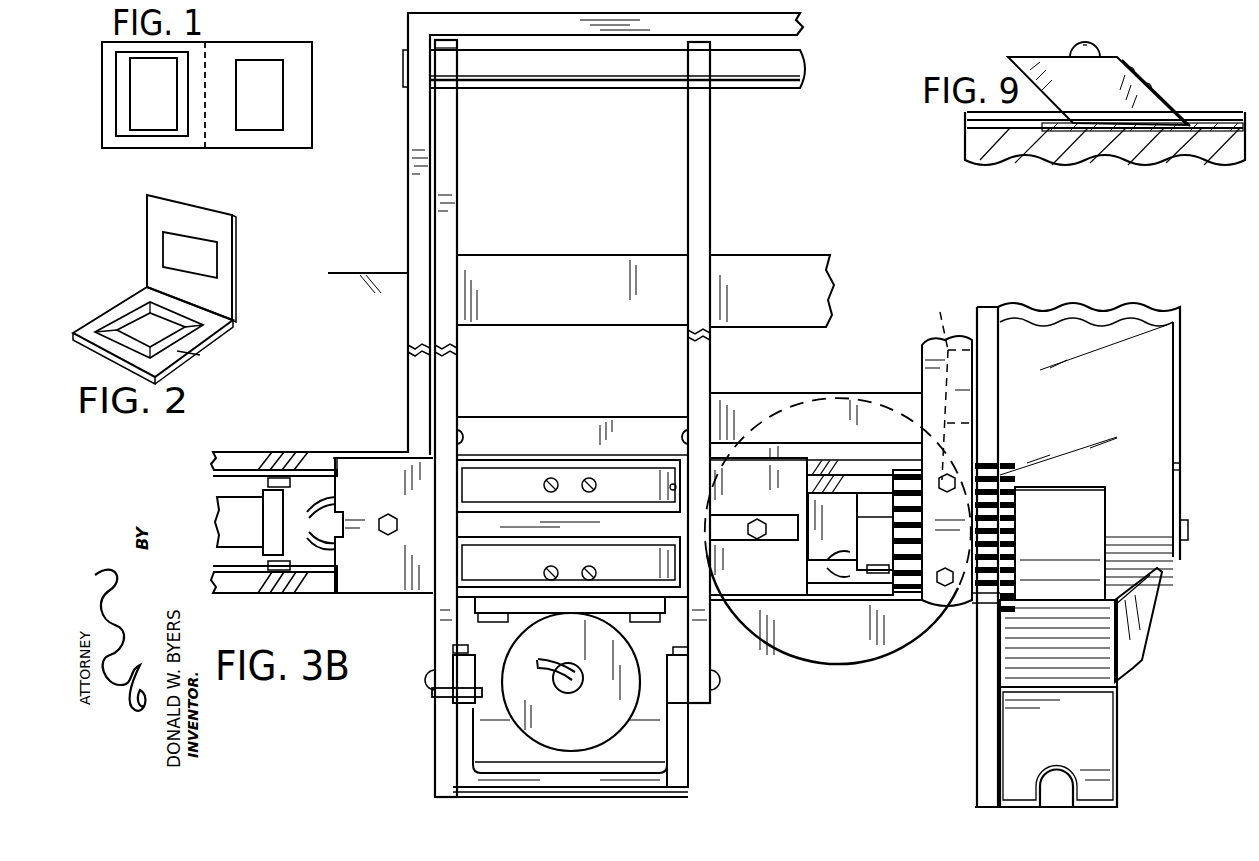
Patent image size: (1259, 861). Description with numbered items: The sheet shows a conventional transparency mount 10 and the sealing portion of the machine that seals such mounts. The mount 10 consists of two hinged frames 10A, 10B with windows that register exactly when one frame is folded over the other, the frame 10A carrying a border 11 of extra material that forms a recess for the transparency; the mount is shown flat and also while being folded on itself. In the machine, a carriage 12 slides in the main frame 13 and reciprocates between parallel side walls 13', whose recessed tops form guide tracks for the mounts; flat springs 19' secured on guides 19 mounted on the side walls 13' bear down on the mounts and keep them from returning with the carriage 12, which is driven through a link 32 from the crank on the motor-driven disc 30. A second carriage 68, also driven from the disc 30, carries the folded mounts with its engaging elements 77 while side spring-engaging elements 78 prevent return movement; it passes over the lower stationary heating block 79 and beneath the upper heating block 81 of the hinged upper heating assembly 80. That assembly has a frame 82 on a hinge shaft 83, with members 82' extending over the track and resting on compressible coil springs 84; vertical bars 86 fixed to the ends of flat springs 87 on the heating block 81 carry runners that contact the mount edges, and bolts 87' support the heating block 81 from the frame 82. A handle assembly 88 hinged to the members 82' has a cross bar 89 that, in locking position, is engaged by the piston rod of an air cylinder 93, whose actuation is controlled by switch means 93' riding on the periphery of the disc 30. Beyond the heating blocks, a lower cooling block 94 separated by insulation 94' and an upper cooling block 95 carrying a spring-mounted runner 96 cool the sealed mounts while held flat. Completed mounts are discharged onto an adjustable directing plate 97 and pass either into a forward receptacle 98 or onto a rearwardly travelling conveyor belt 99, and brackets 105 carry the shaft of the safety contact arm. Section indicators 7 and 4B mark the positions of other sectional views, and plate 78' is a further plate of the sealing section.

In FIG. 1, the mount 10 is at (230, 80).
In FIG. 2, the mount 10 is at (194, 295).
In FIG. 1, the frame 10A is at (111, 95).
In FIG. 2, the frame 10A is at (118, 313).
In FIG. 9, the frame 10A is at (1082, 130).
In FIG. 1, the frame 10B is at (278, 95).
In FIG. 2, the frame 10B is at (193, 246).
In FIG. 1, the border 11 is at (146, 94).
In FIG. 2, the border 11 is at (201, 358).
In FIG. 9, the carriage 12 is at (1138, 147).
In FIG. 9, the guides 19 is at (1097, 83).
In FIG. 9, the flat springs 19' is at (1165, 93).
In FIG. 3B, the main frame 13 is at (760, 410).
In FIG. 3B, the side walls 13' is at (568, 526).
In FIG. 3B, the disc 30 is at (858, 642).
In FIG. 3B, the link 32 is at (249, 522).
In FIG. 3B, the second carriage 68 is at (827, 562).
In FIG. 3B, the engaging elements 77 is at (268, 482).
In FIG. 3B, the side spring-engaging elements 78 is at (572, 436).
In FIG. 3B, the plate 78' is at (816, 434).
In FIG. 3B, the lower stationary heating block 79 is at (828, 548).
In FIG. 3B, the upper heating assembly 80 is at (458, 210).
In FIG. 3B, the upper heating block 81 is at (621, 372).
In FIG. 3B, the frame 82 is at (640, 420).
In FIG. 3B, the frame members 82' is at (570, 628).
In FIG. 3B, the hinge shaft 83 is at (617, 54).
In FIG. 3B, the compressible coil springs 84 is at (460, 430).
In FIG. 3B, the vertical bars 86 is at (673, 490).
In FIG. 3B, the flat spring 87 is at (572, 528).
In FIG. 3B, the bolts 87' is at (550, 525).
In FIG. 3B, the handle assembly 88 is at (680, 743).
In FIG. 3B, the cross bar 89 is at (652, 668).
In FIG. 3B, the air cylinder 93 is at (571, 682).
In FIG. 3B, the switch means 93' is at (947, 447).
In FIG. 3B, the lower cooling block 94 is at (875, 531).
In FIG. 3B, the insulation 94' is at (872, 505).
In FIG. 3B, the upper cooling block 95 is at (910, 590).
In FIG. 3B, the spring-mounted runner 96 is at (860, 480).
In FIG. 3B, the adjustable directing plate 97 is at (1062, 648).
In FIG. 3B, the forward receptacle 98 is at (1058, 747).
In FIG. 3B, the conveyor belt 99 is at (1093, 444).
In FIG. 3B, the brackets 105 is at (282, 452).
In FIG. 3B, the section line 7 is at (567, 580).
In FIG. 3B, the section line 4B is at (709, 526).